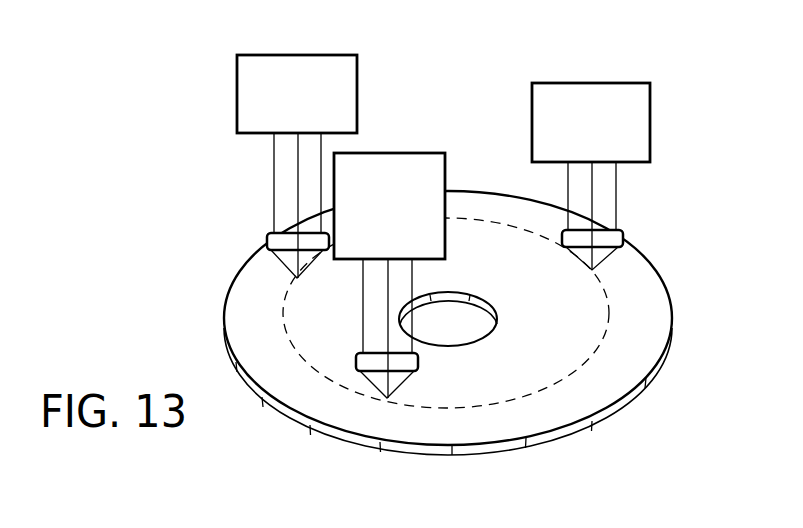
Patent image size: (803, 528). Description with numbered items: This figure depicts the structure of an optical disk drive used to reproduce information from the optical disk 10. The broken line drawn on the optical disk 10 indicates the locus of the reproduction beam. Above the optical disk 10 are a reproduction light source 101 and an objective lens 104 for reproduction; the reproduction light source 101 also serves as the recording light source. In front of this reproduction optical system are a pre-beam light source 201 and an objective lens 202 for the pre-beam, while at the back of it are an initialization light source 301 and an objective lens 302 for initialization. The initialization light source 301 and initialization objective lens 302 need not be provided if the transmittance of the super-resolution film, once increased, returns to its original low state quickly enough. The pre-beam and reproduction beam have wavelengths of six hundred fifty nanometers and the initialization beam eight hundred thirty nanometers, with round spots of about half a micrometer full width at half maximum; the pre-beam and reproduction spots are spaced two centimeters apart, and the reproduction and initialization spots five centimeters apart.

The optical disk 10 is at (671, 327).
The reproduction light source 101 is at (408, 153).
The objective lens for reproduction 104 is at (418, 365).
The pre-beam light source 201 is at (237, 100).
The objective lens for a pre-beam 202 is at (267, 243).
The initialization light source 301 is at (650, 117).
The objective lens for initialization 302 is at (623, 236).